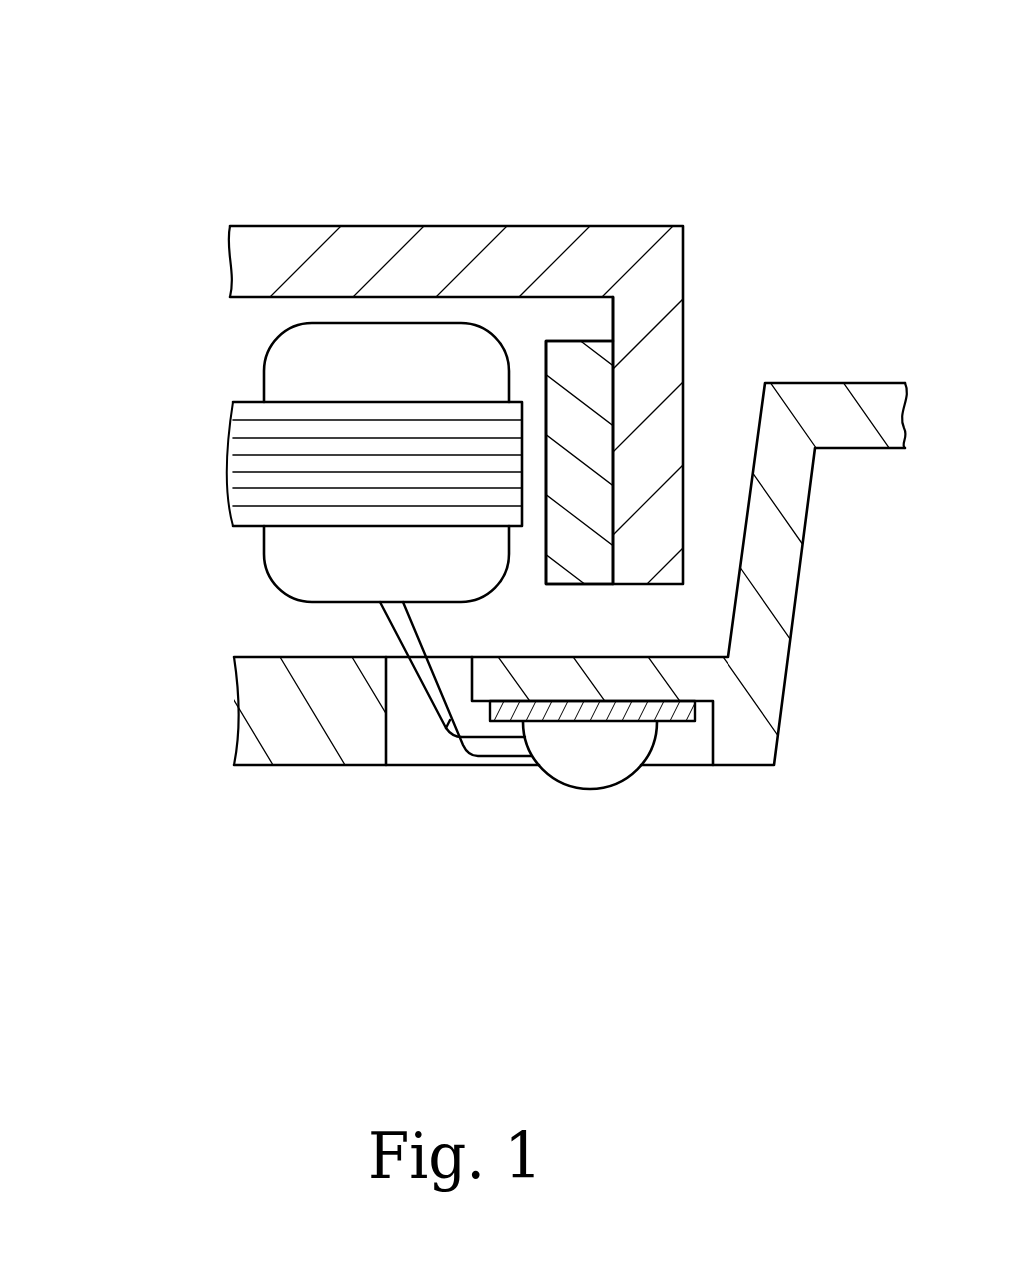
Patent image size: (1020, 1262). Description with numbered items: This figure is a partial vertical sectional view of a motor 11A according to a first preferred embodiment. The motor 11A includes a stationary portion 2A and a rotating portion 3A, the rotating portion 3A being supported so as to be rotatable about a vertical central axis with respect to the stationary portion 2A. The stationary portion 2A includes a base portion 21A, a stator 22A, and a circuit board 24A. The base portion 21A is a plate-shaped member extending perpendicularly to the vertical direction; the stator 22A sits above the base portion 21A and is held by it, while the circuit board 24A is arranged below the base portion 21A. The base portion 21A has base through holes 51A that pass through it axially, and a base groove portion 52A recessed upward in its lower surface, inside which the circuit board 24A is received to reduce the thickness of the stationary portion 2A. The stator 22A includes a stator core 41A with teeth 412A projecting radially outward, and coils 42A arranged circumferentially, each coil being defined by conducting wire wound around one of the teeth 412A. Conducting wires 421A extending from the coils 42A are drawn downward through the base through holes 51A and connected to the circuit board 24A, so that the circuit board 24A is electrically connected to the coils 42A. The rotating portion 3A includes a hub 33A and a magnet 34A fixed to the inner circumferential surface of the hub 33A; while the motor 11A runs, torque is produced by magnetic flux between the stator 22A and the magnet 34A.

The motor 11A is at (540, 122).
The stationary portion 2A is at (492, 797).
The base portion 21A is at (735, 725).
The stator 22A is at (218, 878).
The circuit board 24A is at (600, 710).
The rotating portion 3A is at (270, 216).
The hub 33A is at (660, 330).
The magnet 34A is at (572, 385).
The stator core 41A is at (283, 467).
The coils 42A is at (332, 553).
The teeth 412A is at (372, 450).
The conducting wires 421A is at (418, 664).
The base through holes 51A is at (405, 637).
The base groove portion 52A is at (679, 745).